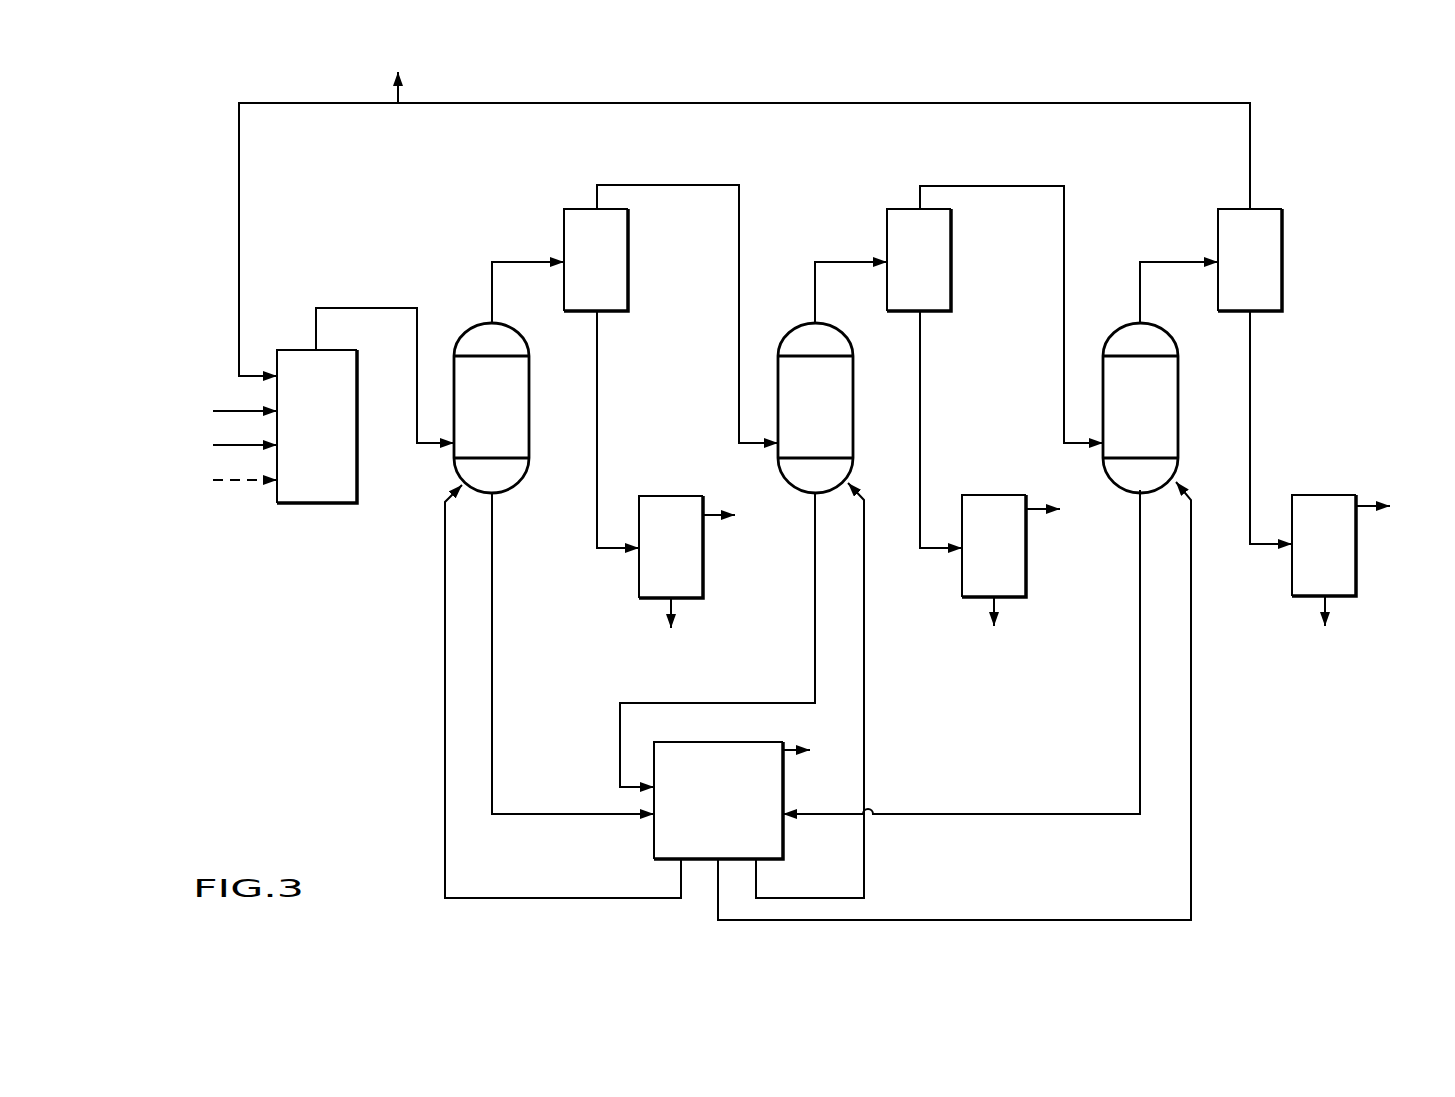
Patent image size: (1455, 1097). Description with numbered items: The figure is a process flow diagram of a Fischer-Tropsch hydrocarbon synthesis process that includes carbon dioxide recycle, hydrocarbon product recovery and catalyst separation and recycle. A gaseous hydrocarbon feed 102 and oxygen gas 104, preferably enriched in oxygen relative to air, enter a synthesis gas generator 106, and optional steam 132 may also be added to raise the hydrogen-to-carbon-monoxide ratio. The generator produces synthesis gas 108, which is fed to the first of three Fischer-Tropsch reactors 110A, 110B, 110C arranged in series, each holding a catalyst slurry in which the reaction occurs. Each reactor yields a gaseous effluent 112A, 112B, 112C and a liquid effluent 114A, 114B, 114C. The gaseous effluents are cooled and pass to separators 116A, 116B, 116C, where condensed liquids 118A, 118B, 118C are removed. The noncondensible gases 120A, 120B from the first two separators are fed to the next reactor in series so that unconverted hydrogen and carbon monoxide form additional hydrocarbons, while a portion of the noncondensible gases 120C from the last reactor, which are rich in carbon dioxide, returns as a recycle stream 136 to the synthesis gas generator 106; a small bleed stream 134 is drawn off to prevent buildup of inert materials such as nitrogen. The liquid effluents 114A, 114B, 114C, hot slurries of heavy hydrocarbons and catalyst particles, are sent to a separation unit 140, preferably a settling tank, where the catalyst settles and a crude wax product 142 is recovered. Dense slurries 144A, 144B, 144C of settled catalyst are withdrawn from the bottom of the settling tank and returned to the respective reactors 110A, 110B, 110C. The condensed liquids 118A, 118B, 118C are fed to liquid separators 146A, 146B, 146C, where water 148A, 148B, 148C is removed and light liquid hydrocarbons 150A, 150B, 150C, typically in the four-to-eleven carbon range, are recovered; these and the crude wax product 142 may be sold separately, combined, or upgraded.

The gaseous hydrocarbon feed 102 is at (225, 412).
The oxygen gas 104 is at (225, 446).
The steam 132 is at (225, 481).
The synthesis gas generator 106 is at (334, 437).
The synthesis gas 108 is at (367, 308).
The Fischer-Tropsch reactor 110A is at (513, 418).
The Fischer-Tropsch reactor 110B is at (836, 418).
The Fischer-Tropsch reactor 110C is at (1161, 418).
The gaseous effluent 112A is at (513, 262).
The gaseous effluent 112B is at (828, 262).
The gaseous effluent 112C is at (1150, 262).
The liquid effluent 114A is at (493, 597).
The liquid effluent 114B is at (813, 618).
The liquid effluent 114C is at (1139, 672).
The separator 116A is at (617, 271).
The separator 116B is at (940, 271).
The separator 116C is at (1271, 271).
The condensed liquids 118A is at (597, 352).
The condensed liquids 118B is at (923, 383).
The condensed liquids 118C is at (1252, 385).
The noncondensible gases 120A is at (688, 182).
The noncondensible gases 120B is at (993, 186).
The noncondensible gases 120C is at (1250, 160).
The bleed stream 134 is at (398, 72).
The recycle stream 136 is at (250, 375).
The separation unit 140 is at (733, 820).
The crude wax product 142 is at (814, 751).
The dense slurry 144A is at (445, 692).
The dense slurry 144B is at (864, 707).
The dense slurry 144C is at (1191, 718).
The liquid separator 146A is at (692, 556).
The liquid separator 146B is at (1015, 556).
The liquid separator 146C is at (1345, 556).
The water 148A is at (671, 631).
The water 148B is at (995, 630).
The water 148C is at (1325, 629).
The light liquid hydrocarbons 150A is at (746, 515).
The light liquid hydrocarbons 150B is at (1070, 511).
The light liquid hydrocarbons 150C is at (1398, 508).